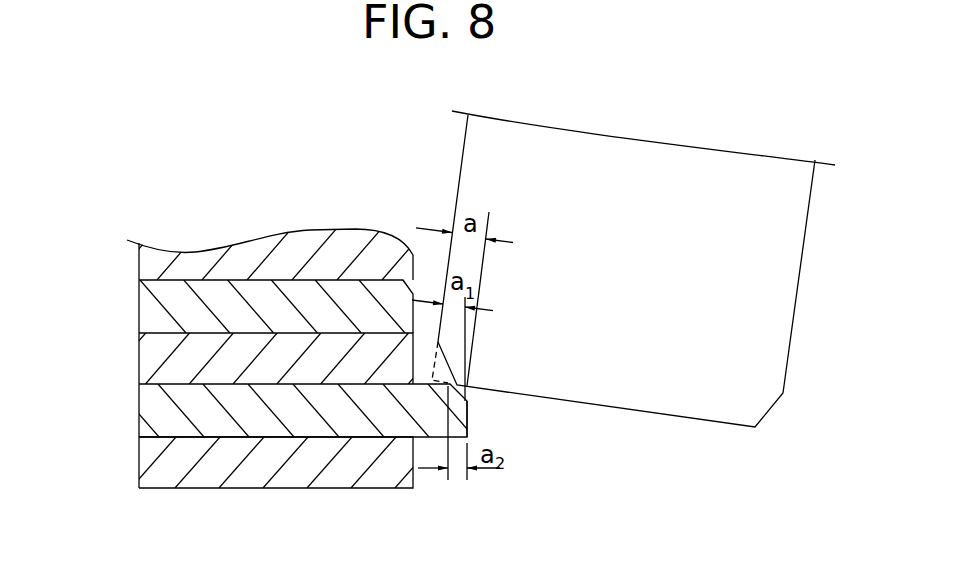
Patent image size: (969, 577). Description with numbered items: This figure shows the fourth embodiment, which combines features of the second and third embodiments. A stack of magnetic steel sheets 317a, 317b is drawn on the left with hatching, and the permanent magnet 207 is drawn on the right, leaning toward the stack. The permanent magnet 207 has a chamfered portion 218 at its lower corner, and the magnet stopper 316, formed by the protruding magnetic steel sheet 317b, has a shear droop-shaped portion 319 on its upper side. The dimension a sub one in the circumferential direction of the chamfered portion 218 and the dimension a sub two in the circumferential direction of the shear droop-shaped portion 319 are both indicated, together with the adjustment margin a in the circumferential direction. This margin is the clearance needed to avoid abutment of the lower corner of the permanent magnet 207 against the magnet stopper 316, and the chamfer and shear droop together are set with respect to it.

The magnetic steel sheet 317a is at (149, 303).
The magnetic steel sheet 317b is at (149, 408).
The permanent magnet 207 is at (768, 341).
The chamfered portion 218 is at (440, 371).
The shear droop-shaped portion 319 is at (467, 397).
The magnet stopper 316 is at (466, 418).